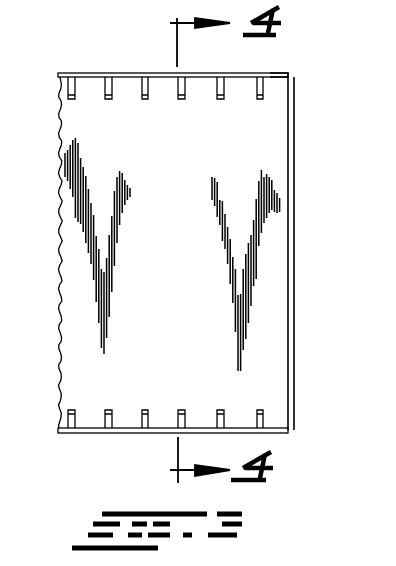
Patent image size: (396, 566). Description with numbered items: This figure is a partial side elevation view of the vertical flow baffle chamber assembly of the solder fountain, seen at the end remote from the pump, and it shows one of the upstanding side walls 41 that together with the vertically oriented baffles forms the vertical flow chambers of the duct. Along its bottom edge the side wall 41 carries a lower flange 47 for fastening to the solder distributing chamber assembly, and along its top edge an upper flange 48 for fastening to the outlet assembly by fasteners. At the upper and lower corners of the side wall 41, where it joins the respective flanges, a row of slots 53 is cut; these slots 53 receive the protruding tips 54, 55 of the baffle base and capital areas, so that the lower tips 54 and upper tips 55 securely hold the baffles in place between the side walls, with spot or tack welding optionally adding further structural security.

The side wall 41 is at (275, 342).
The lower flange 47 is at (289, 433).
The upper flange 48 is at (288, 75).
The slot 53 is at (258, 82).
The protruding tip 54 is at (183, 419).
The protruding tip 55 is at (229, 74).